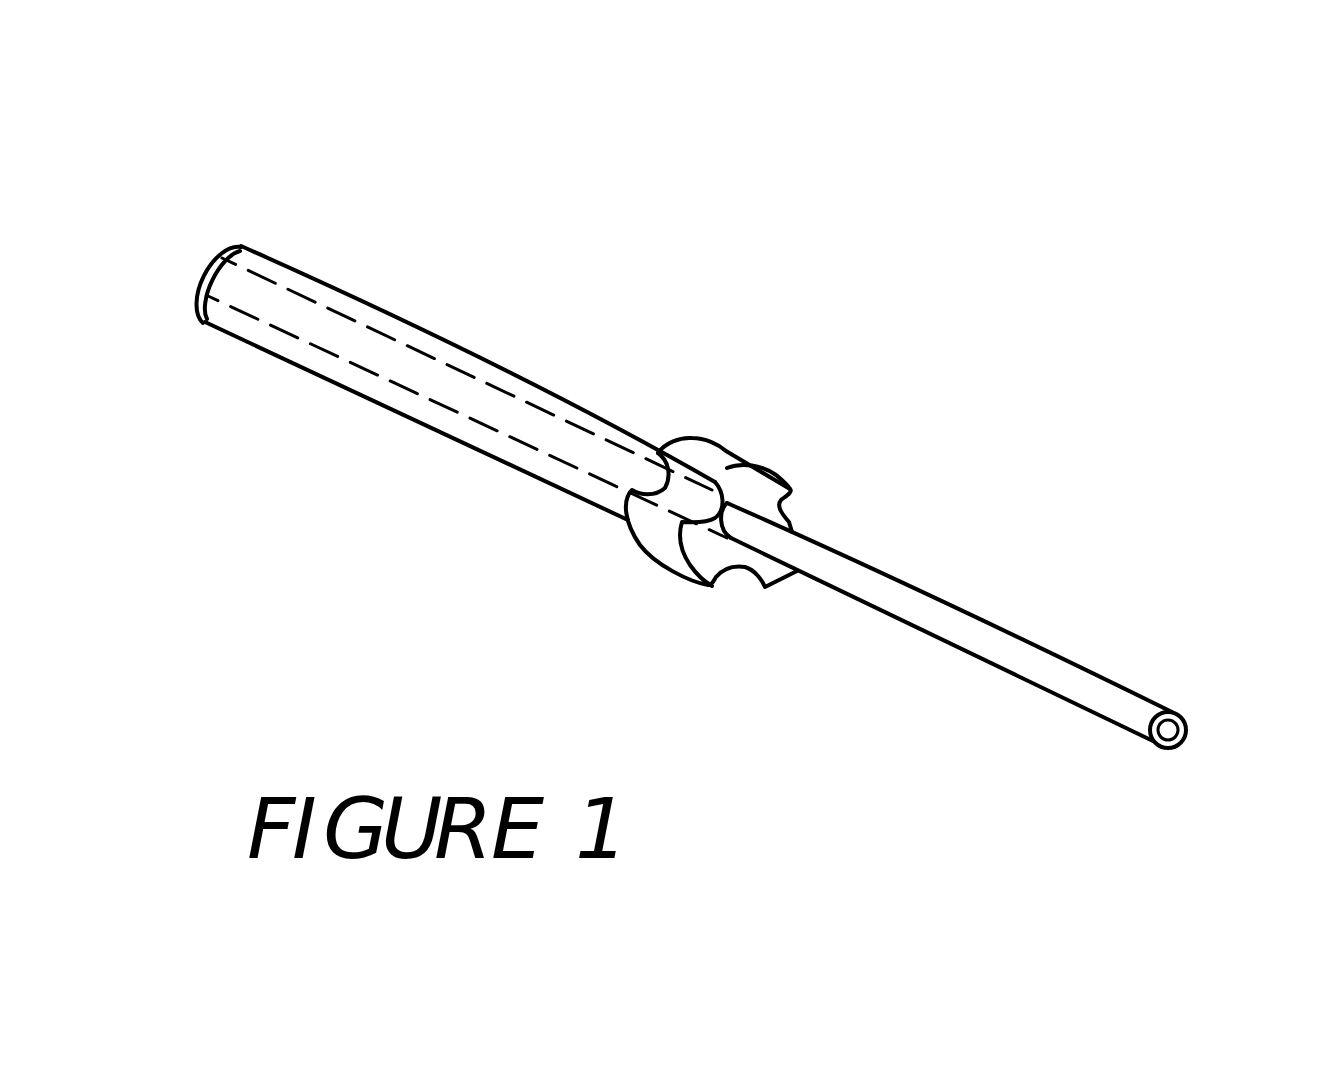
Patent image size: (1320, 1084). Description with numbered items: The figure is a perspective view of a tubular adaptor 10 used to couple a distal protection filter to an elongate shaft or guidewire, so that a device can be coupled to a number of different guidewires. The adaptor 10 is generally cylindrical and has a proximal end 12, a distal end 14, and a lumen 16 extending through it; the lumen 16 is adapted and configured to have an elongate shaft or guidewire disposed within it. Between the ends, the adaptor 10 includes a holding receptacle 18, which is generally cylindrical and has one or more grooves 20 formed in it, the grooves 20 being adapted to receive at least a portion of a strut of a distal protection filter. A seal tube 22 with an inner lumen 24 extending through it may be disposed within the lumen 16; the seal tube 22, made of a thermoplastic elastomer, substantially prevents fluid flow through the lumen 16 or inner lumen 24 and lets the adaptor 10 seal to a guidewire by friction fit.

The tubular adaptor 10 is at (388, 265).
The proximal end 12 is at (193, 272).
The distal end 14 is at (760, 480).
The lumen 16 is at (727, 466).
The holding receptacle 18 is at (667, 567).
The grooves 20 is at (686, 496).
The seal tube 22 is at (868, 576).
The inner lumen 24 is at (1176, 726).